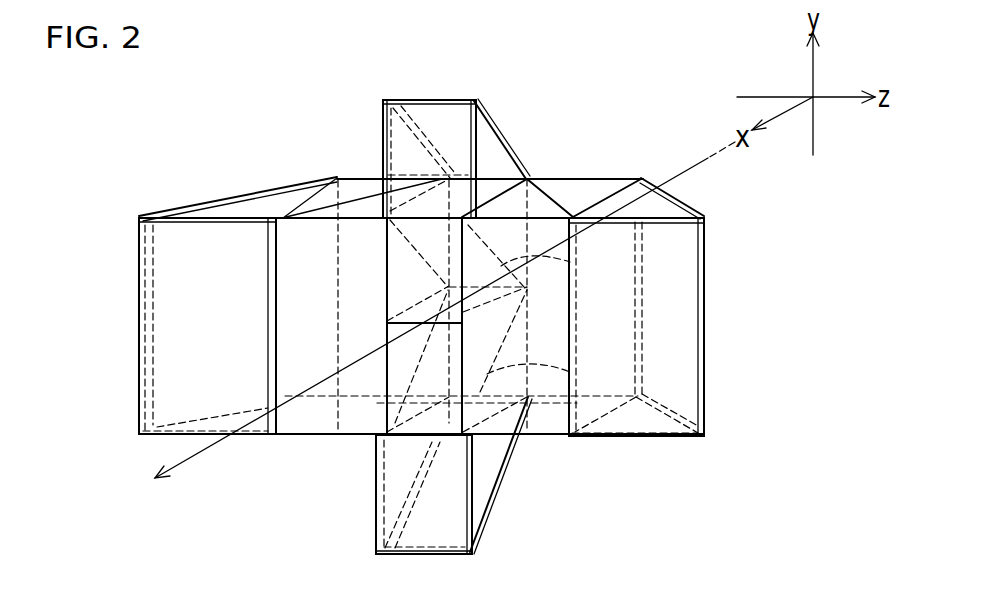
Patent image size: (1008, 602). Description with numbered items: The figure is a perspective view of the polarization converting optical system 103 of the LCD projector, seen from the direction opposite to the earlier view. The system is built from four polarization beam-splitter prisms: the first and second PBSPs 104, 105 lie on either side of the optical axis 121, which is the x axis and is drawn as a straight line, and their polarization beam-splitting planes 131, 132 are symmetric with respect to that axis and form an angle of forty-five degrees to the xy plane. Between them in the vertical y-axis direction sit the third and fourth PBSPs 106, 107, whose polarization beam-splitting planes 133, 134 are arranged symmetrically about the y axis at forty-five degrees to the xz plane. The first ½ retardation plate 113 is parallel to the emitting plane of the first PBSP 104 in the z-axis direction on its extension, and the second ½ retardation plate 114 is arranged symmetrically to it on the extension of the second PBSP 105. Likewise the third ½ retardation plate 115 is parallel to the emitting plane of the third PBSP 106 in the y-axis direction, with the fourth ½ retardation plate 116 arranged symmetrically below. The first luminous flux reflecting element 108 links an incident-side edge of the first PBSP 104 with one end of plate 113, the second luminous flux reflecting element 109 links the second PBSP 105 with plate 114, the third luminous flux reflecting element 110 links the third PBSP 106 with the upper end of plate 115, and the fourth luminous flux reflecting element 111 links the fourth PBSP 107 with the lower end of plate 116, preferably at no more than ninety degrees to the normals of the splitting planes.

The polarization converting optical system 103 is at (738, 433).
The first polarization beam-splitter prism 104 is at (550, 180).
The second polarization beam-splitter prism 105 is at (297, 436).
The third polarization beam-splitter prism 106 is at (387, 252).
The fourth polarization beam-splitter prism 107 is at (387, 338).
The first luminous flux reflecting element 108 is at (684, 202).
The second luminous flux reflecting element 109 is at (209, 200).
The third luminous flux reflecting element 110 is at (496, 127).
The fourth luminous flux reflecting element 111 is at (490, 513).
The first ½ retardation plate 113 is at (662, 439).
The second ½ retardation plate 114 is at (138, 277).
The third ½ retardation plate 115 is at (381, 106).
The fourth ½ retardation plate 116 is at (377, 537).
The optical axis 121 is at (197, 458).
The polarization beam-splitting plane of the first PBSP 131 is at (570, 206).
The polarization beam-splitting plane of the second PBSP 132 is at (357, 195).
The polarization beam-splitting plane of the third PBSP 133 is at (573, 253).
The polarization beam-splitting plane of the fourth PBSP 134 is at (573, 373).